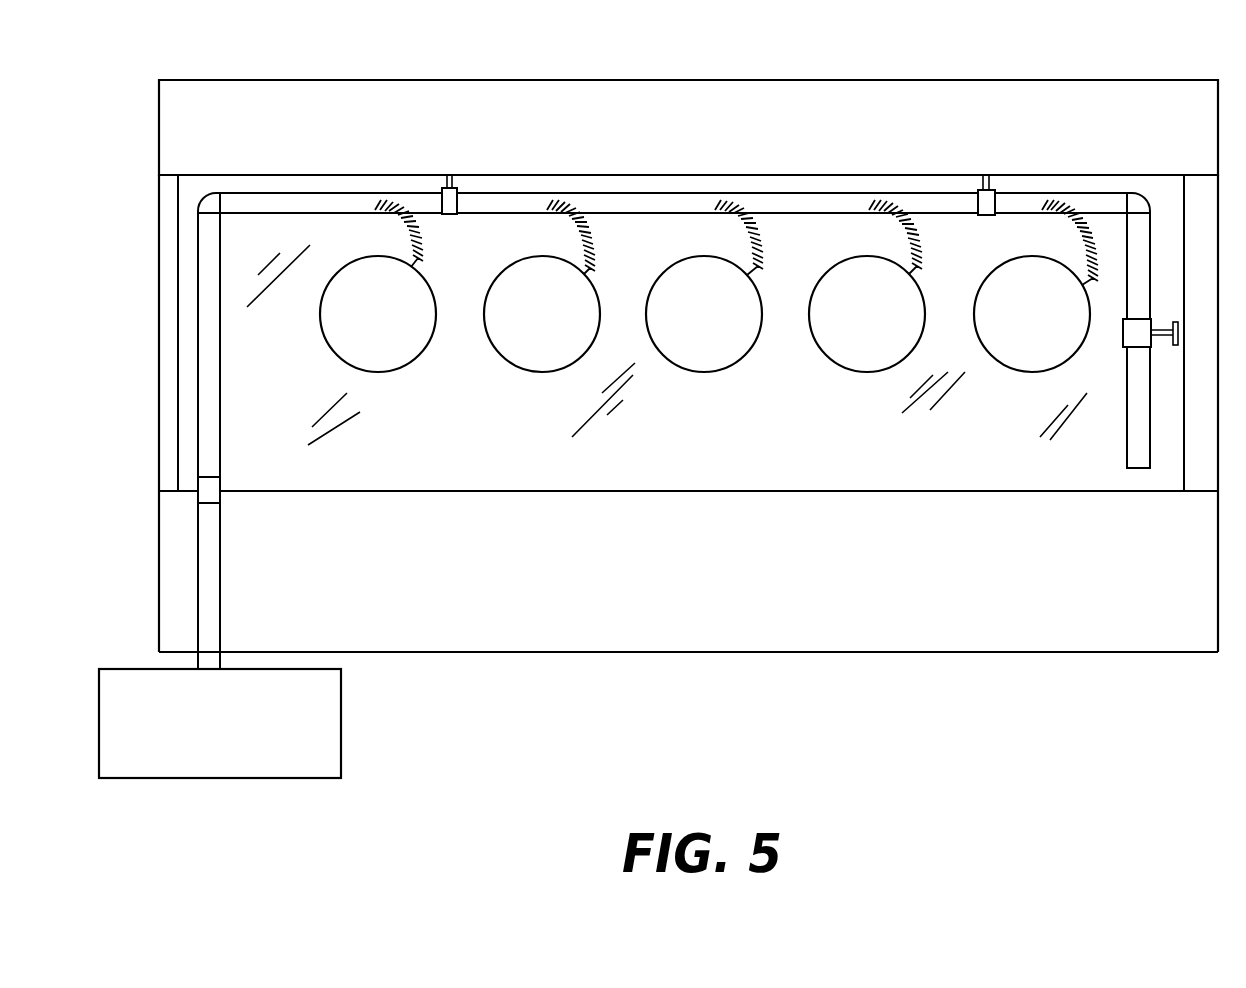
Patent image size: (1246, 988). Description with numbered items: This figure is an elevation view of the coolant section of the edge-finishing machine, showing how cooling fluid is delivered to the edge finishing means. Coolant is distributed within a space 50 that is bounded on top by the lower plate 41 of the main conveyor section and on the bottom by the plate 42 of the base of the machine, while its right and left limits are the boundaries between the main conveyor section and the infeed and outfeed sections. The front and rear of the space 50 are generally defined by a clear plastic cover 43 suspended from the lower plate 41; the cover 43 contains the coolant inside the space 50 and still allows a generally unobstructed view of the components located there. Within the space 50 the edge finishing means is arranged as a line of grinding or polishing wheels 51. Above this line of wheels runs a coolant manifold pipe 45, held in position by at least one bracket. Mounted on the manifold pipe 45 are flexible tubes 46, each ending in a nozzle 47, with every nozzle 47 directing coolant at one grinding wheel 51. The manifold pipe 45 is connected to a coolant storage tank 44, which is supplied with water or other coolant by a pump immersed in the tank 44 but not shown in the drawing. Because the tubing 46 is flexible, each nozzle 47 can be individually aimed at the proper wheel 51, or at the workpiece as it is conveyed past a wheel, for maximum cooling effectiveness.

The lower plate of the main conveyor section 41 is at (220, 80).
The plate of the base 42 is at (1073, 652).
The clear plastic cover 43 is at (952, 383).
The coolant storage tank 44 is at (341, 714).
The coolant manifold pipe 45 is at (299, 193).
The flexible tube 46 is at (405, 200).
The nozzle 47 is at (415, 262).
The space 50 is at (793, 468).
The grinding or polishing wheel 51 is at (418, 355).